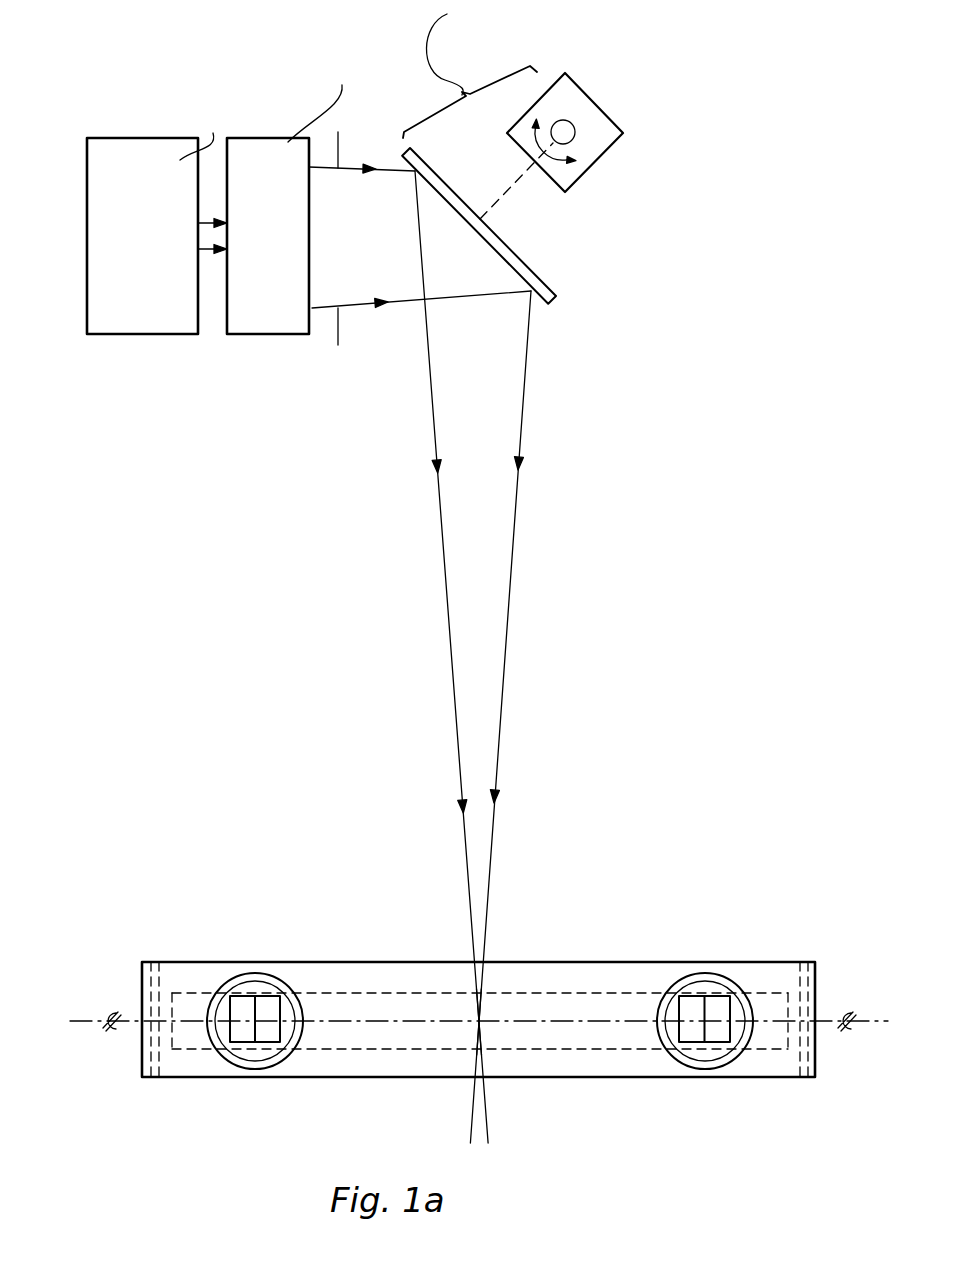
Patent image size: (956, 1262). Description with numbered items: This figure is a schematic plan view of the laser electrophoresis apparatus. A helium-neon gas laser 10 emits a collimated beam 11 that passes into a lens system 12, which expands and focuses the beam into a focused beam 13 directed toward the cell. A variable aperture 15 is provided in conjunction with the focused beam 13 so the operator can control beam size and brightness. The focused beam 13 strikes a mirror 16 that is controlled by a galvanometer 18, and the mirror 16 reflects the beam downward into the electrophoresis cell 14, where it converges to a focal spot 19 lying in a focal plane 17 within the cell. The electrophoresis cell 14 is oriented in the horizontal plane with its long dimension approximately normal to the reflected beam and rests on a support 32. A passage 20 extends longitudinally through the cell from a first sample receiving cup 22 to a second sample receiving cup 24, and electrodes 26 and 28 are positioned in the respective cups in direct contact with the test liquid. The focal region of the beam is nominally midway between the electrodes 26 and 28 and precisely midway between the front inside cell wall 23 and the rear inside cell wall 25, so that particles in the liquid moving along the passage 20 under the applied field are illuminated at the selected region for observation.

The laser 10 is at (140, 328).
The collimated beam 11 is at (213, 252).
The lens system 12 is at (278, 325).
The focused beam 13 is at (400, 303).
The electrophoresis cell 14 is at (787, 968).
The variable aperture 15 is at (338, 148).
The mirror 16 is at (538, 303).
The focal plane 17 is at (874, 1023).
The galvanometer 18 is at (586, 157).
The focal spot 19 is at (480, 1020).
The passage 20 is at (480, 980).
The first sample receiving cup 22 is at (233, 983).
The front inside cell wall 23 is at (563, 1050).
The second sample receiving cup 24 is at (726, 982).
The rear inside cell wall 25 is at (565, 988).
The electrode 26 is at (276, 995).
The electrode 28 is at (688, 996).
The support 32 is at (155, 1080).